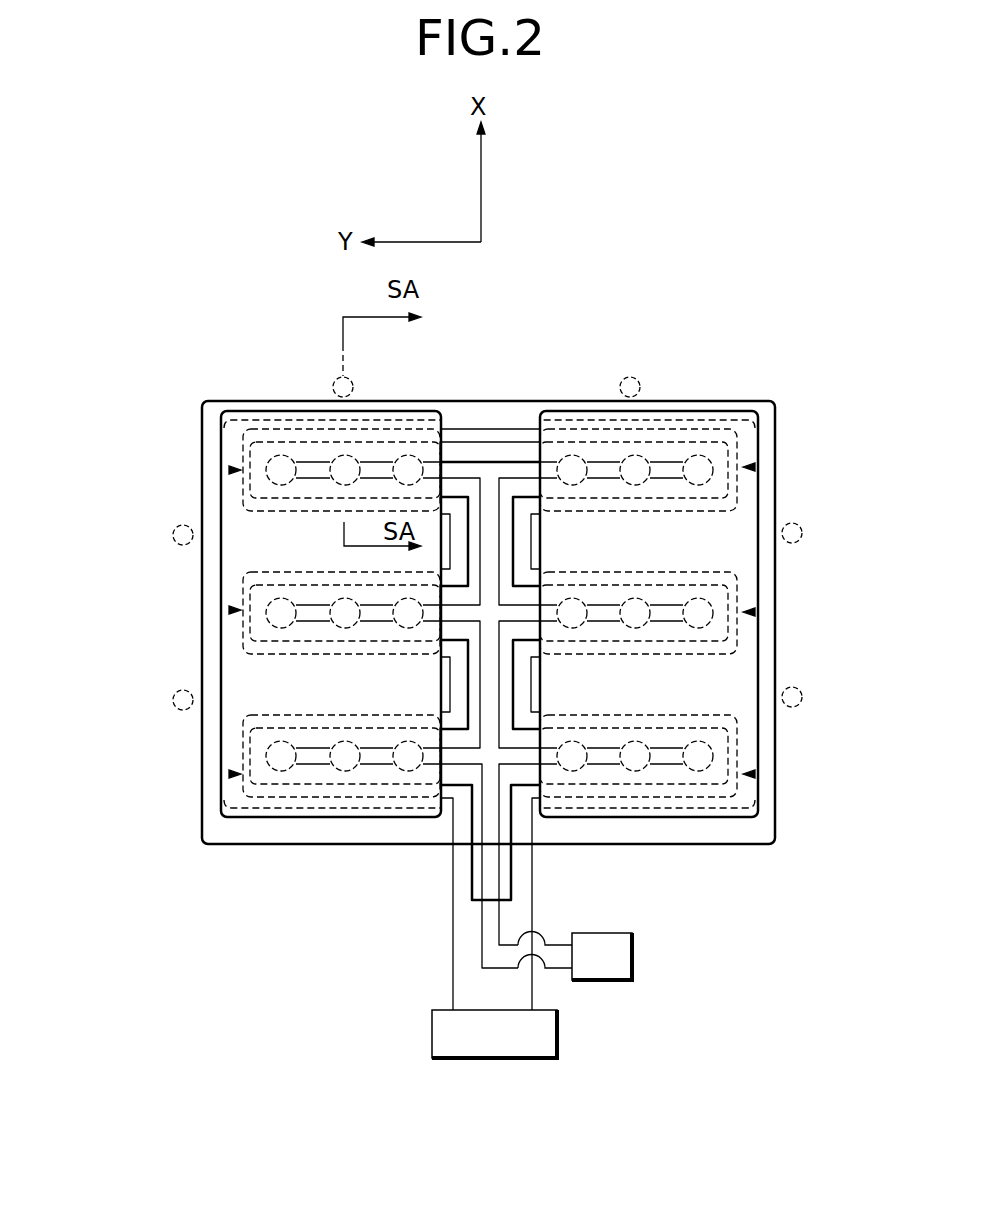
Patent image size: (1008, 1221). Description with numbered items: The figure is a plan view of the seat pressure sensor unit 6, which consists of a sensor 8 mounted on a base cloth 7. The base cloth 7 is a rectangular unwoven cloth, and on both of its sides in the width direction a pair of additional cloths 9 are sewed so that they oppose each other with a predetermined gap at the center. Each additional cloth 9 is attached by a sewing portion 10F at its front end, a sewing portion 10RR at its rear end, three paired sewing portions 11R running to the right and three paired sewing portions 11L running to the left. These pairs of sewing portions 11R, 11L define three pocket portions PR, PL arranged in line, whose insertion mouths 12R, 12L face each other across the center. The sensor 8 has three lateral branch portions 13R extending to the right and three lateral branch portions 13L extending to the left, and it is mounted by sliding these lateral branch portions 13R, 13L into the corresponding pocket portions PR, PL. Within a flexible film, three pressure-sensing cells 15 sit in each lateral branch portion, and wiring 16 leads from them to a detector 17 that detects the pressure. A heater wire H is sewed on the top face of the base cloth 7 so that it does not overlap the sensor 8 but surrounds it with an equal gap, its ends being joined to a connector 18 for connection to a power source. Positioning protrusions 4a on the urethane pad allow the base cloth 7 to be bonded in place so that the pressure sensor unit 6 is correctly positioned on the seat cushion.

The protrusions 4a is at (353, 385).
The pressure sensor unit 6 is at (422, 604).
The base cloth 7 is at (202, 805).
The sensor 8 is at (498, 424).
The additional cloths 9 is at (221, 720).
The sewing portion 10F is at (240, 425).
The sewing portion 10RR is at (350, 808).
The sewing portions 11L is at (243, 438).
The sewing portions 11R is at (705, 430).
The insertion mouth 12L is at (447, 428).
The insertion mouth 12R is at (520, 440).
The lateral branch portions 13L is at (290, 428).
The lateral branch portions 13R is at (780, 400).
The cells 15 is at (357, 770).
The wiring 16 is at (552, 972).
The detector 17 is at (633, 952).
The connector 18 is at (432, 1037).
The heater wire H is at (453, 960).
The pocket portions PL is at (230, 470).
The pocket portions PR is at (757, 467).